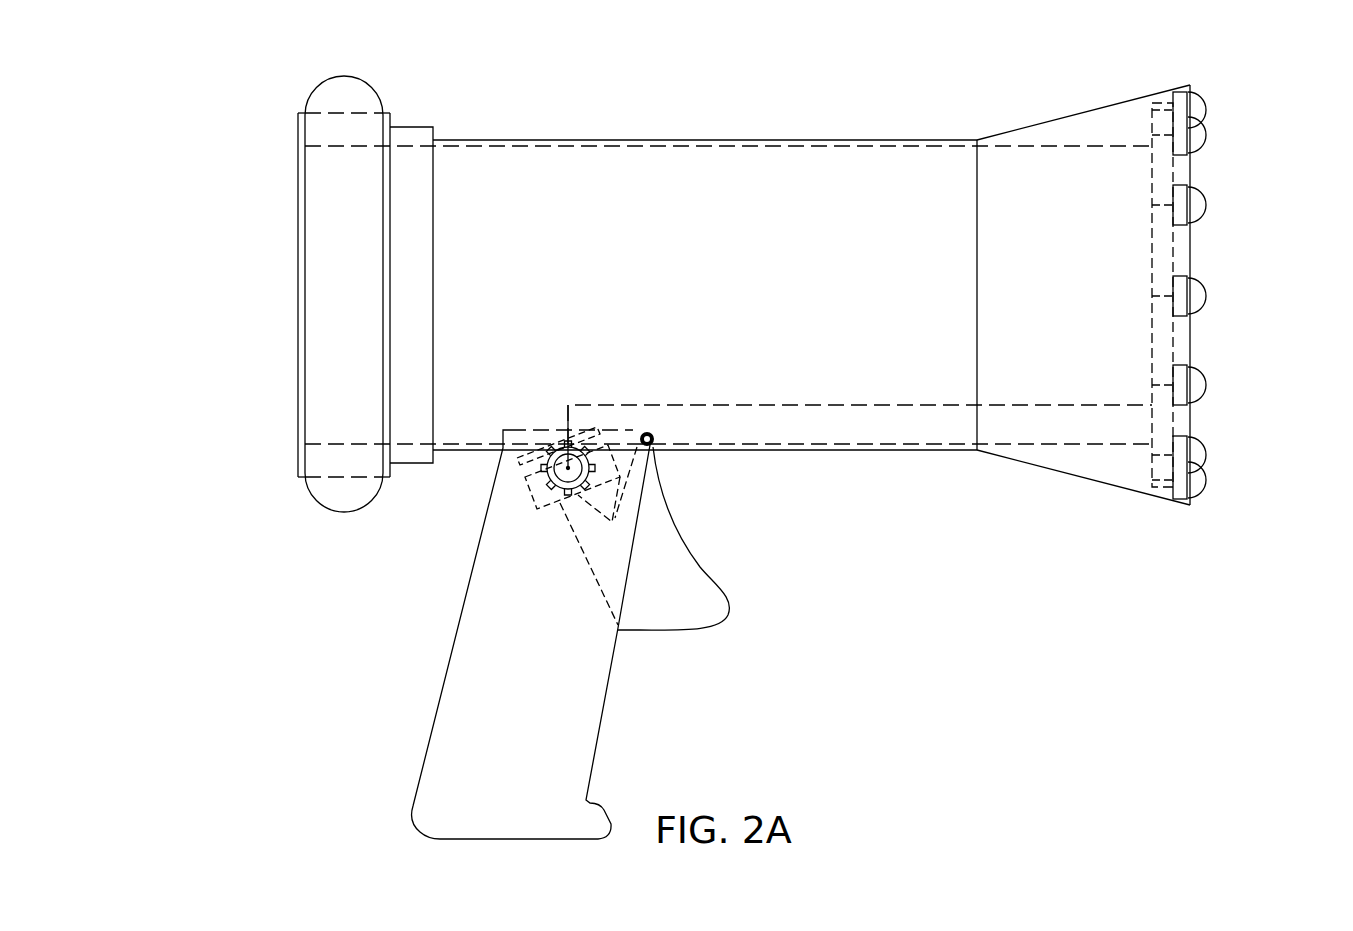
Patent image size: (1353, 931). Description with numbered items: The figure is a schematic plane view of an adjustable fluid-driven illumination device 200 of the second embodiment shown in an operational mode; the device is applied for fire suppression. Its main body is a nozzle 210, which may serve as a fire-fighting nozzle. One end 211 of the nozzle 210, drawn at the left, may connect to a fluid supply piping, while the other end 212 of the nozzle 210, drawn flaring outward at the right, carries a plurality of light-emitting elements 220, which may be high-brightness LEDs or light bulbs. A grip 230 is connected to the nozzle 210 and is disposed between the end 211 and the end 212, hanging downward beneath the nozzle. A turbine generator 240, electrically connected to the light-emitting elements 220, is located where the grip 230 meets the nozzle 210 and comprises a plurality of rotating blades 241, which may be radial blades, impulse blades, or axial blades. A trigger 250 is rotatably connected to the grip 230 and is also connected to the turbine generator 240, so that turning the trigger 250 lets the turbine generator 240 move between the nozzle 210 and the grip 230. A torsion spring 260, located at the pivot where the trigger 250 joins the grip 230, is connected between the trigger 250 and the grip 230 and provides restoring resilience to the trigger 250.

The adjustable fluid-driven illumination device 200 is at (243, 100).
The nozzle 210 is at (706, 137).
The end of the nozzle 211 is at (298, 293).
The other end of the nozzle 212 is at (1190, 342).
The light-emitting elements 220 is at (1206, 384).
The grip 230 is at (437, 712).
The turbine generator 240 is at (528, 503).
The rotating blades 241 is at (535, 523).
The trigger 250 is at (677, 630).
The torsion spring 260 is at (658, 455).